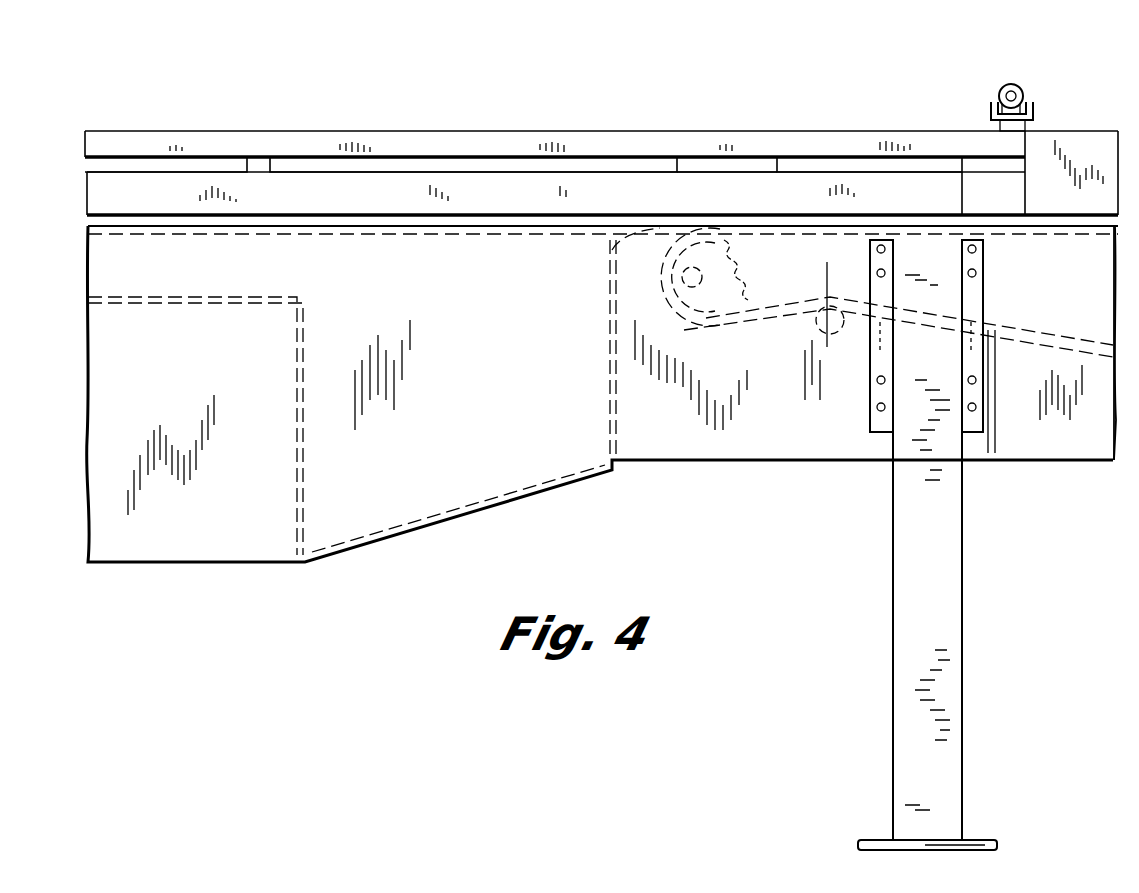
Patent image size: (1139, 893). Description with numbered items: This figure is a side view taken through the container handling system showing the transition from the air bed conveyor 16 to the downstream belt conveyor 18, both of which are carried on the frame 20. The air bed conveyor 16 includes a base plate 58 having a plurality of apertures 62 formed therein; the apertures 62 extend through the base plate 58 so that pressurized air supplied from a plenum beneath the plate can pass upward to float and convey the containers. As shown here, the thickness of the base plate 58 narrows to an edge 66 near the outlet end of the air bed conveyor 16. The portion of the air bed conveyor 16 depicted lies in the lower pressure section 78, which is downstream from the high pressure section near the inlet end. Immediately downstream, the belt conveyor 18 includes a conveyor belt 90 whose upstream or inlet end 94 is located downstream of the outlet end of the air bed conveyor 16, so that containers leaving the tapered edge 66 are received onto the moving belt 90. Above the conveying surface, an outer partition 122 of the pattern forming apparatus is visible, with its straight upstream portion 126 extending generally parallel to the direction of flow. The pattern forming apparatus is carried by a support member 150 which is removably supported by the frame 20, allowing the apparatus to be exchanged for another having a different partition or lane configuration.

The air bed conveyor 16 is at (413, 113).
The downstream belt conveyor 18 is at (918, 97).
The frame 20 is at (928, 603).
The base plate 58 is at (190, 217).
The apertures 62 is at (392, 216).
The edge 66 is at (645, 236).
The lower pressure section 78 is at (130, 193).
The conveyor belt 90 is at (1061, 338).
The inlet end 94 is at (706, 215).
The outer partitions 122 is at (656, 206).
The straight upstream portion 126 is at (481, 175).
The support member 150 is at (973, 118).